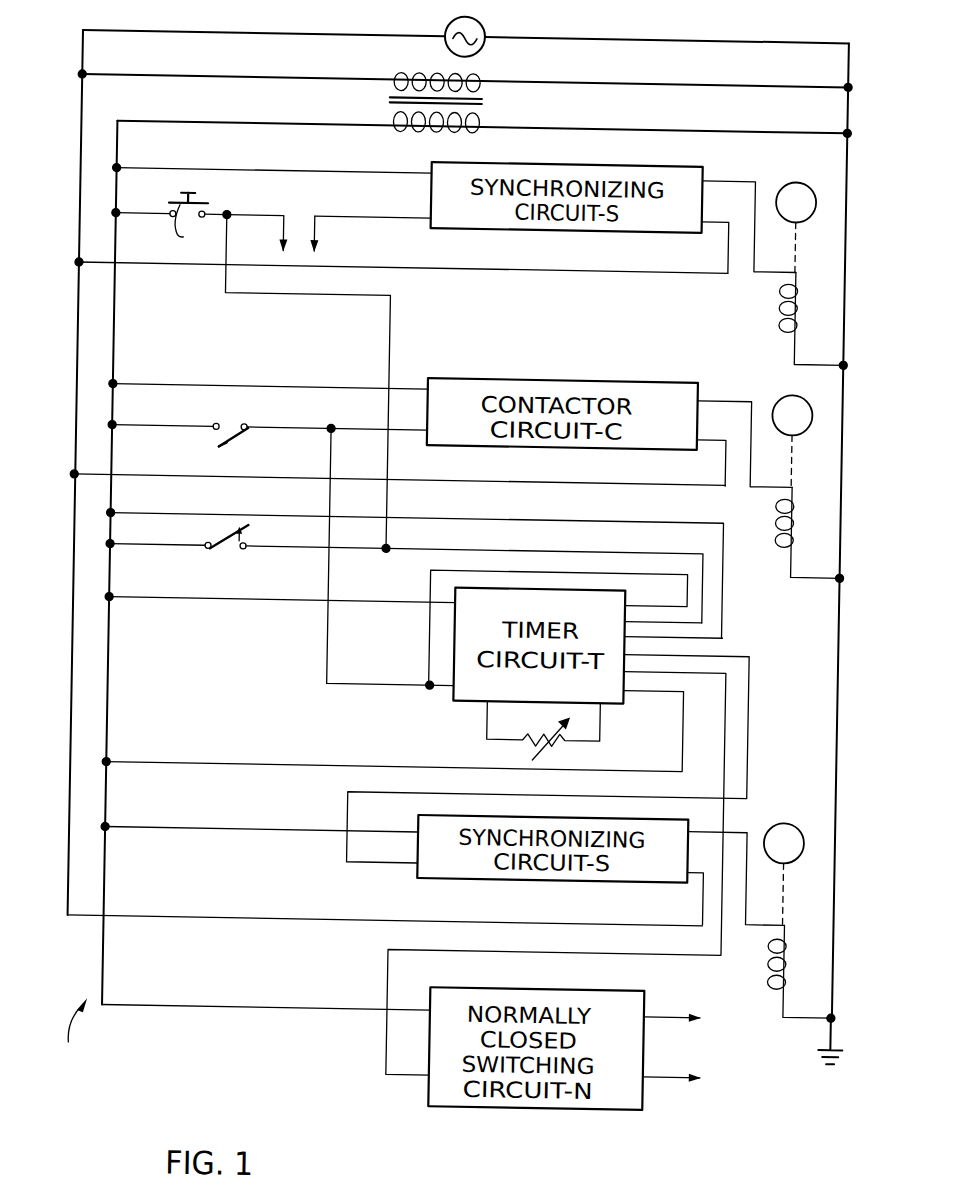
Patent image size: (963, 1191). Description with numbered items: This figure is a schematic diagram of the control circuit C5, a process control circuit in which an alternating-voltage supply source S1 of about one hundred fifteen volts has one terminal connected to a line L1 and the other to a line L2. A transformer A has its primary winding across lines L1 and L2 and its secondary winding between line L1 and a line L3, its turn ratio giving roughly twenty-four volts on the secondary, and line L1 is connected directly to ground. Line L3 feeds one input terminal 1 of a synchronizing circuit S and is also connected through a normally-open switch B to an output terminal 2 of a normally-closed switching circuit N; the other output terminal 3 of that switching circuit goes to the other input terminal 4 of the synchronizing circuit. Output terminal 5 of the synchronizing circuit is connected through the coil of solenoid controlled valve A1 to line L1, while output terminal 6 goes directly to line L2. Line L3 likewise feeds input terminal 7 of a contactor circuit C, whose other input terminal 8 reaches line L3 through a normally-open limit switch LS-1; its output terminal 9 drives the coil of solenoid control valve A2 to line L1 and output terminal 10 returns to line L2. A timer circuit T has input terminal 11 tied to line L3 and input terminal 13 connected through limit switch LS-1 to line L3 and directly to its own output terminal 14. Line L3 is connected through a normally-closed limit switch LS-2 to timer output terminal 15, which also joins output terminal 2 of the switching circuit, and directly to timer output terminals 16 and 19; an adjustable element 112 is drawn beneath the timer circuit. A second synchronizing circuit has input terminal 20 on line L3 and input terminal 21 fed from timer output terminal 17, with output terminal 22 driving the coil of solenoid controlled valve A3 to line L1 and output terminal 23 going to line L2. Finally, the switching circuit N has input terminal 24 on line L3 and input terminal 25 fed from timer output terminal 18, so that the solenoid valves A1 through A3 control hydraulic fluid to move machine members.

The synchronizing circuit input lead 1 is at (406, 166).
The output terminal 2 is at (282, 224).
The output terminal 3 is at (324, 226).
The input terminal 4 is at (399, 210).
The output terminal 5 is at (734, 168).
The output terminal 6 is at (729, 213).
The input terminal 7 is at (417, 380).
The input terminal 8 is at (419, 422).
The output terminal 9 is at (718, 376).
The output terminal 10 is at (712, 427).
The input terminal 11 is at (444, 598).
The input terminal 13 is at (445, 676).
The output terminal 14 is at (652, 594).
The output terminal 15 is at (700, 611).
The output terminal 16 is at (722, 626).
The output terminal 17 is at (740, 645).
The output terminal 18 is at (720, 662).
The output terminal 19 is at (670, 680).
The input terminal 20 is at (390, 824).
The input terminal 21 is at (390, 858).
The output terminal 22 is at (714, 822).
The output terminal 23 is at (710, 862).
The input terminal 24 is at (408, 1004).
The input terminal 25 is at (412, 1062).
The variable resistor (timer adjustment) 112 is at (563, 743).
The transformer A is at (484, 104).
The solenoid controlled valve A1 is at (814, 172).
The solenoid control valve A2 is at (783, 386).
The solenoid controlled valve A3 is at (814, 812).
The normally-open switch B is at (169, 223).
The alternating-voltage supply source S1 is at (486, 26).
The line L1 is at (848, 520).
The line L2 is at (68, 460).
The line L3 is at (112, 547).
The normally-open limit switch LS-1 is at (243, 432).
The normally-closed limit switch LS-2 is at (236, 548).
The control circuit C5 is at (192, 1032).